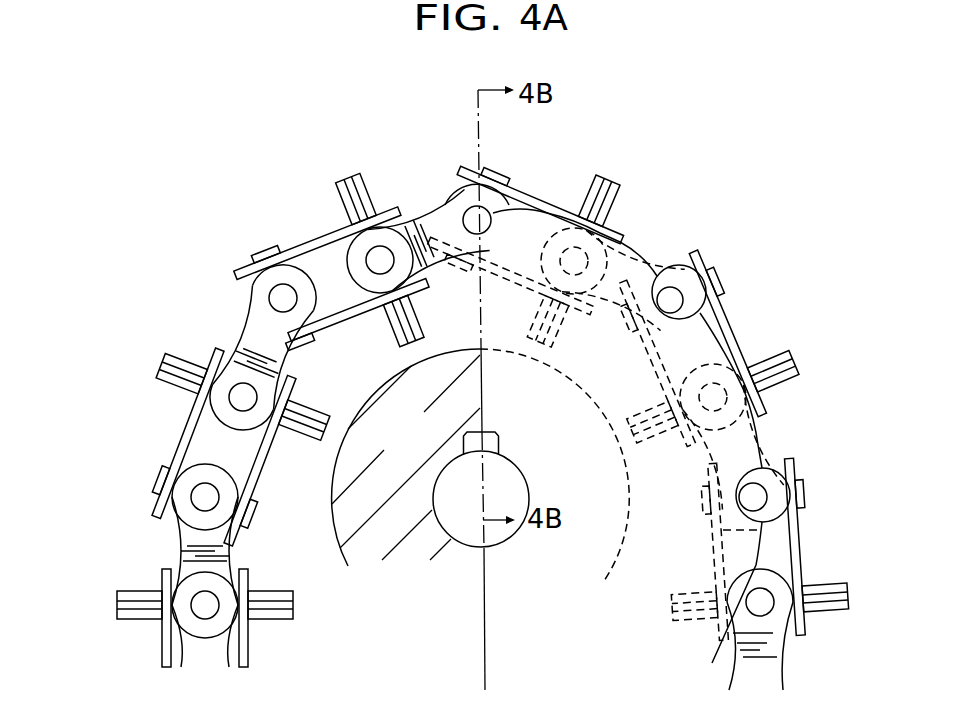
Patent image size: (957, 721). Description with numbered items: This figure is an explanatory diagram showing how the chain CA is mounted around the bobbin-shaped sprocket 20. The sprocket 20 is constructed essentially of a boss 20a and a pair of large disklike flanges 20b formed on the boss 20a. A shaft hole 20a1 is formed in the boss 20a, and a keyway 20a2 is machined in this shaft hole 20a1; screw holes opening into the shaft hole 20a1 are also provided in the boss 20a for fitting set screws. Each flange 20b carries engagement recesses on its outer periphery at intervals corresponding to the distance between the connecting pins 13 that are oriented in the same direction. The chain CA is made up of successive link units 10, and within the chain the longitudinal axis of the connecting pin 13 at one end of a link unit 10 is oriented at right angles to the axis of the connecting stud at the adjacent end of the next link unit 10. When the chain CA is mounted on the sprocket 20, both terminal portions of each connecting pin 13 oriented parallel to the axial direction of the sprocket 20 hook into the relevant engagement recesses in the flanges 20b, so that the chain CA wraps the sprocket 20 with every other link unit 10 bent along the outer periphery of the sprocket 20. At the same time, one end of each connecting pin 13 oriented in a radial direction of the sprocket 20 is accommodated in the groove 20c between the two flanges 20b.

The chain CA is at (230, 330).
The link unit 10 is at (320, 238).
The connecting pin 13 is at (350, 188).
The sprocket 20 is at (640, 243).
The boss 20a is at (336, 534).
The shaft hole 20a1 is at (524, 476).
The keyway 20a2 is at (497, 432).
The flange 20b is at (752, 433).
The groove 20c is at (366, 386).